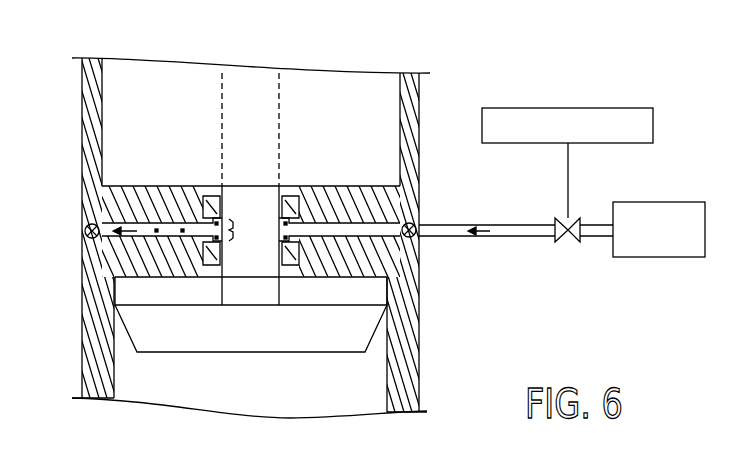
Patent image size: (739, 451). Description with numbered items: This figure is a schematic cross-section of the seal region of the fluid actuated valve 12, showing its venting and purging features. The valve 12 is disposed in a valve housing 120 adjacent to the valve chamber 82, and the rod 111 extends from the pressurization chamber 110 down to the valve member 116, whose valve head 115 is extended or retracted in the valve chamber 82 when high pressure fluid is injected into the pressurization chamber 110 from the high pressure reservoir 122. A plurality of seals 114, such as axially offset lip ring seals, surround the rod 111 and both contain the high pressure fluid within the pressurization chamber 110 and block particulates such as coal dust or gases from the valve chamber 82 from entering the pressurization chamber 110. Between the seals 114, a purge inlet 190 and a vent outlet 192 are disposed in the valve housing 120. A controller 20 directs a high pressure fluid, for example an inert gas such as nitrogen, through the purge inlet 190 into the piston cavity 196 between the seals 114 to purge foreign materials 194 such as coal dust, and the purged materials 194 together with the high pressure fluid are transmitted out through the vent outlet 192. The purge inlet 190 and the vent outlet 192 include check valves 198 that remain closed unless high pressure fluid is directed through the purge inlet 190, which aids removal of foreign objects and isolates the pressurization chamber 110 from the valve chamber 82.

The fluid actuated valve 12 is at (422, 54).
The valve housing 120 is at (86, 83).
The pressurization chamber 110 is at (264, 109).
The seal 114 is at (215, 196).
The foreign materials 194 is at (285, 237).
The piston cavity 196 is at (258, 216).
The vent outlet 192 is at (102, 215).
The purge inlet 190 is at (392, 222).
The check valve 198 is at (94, 244).
The rod 111 is at (264, 296).
The valve head 115 is at (264, 341).
The valve member 116 is at (372, 341).
The valve chamber 82 is at (256, 396).
The controller 20 is at (648, 135).
The high pressure reservoir 122 is at (673, 241).